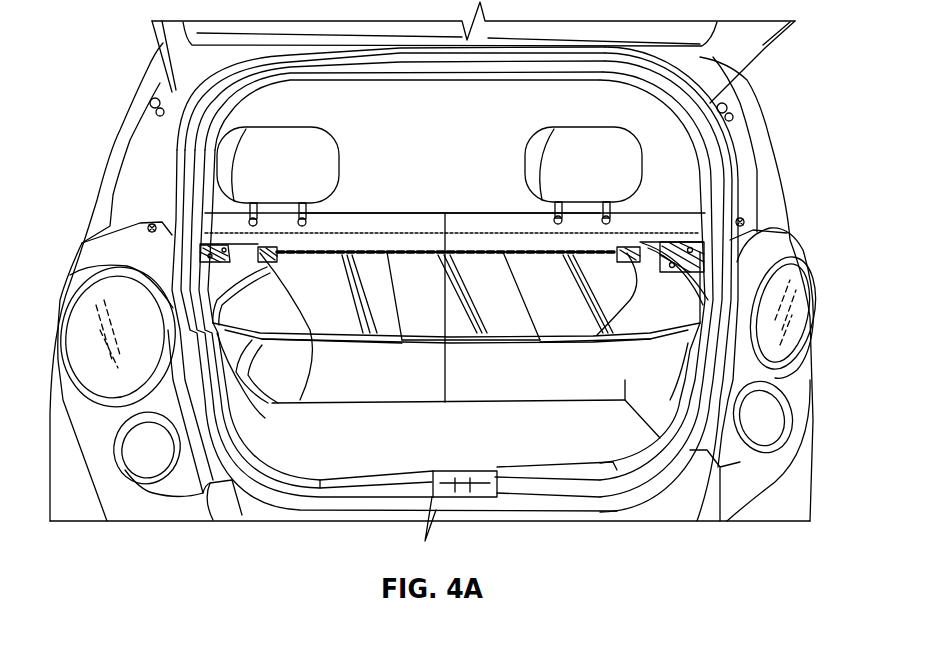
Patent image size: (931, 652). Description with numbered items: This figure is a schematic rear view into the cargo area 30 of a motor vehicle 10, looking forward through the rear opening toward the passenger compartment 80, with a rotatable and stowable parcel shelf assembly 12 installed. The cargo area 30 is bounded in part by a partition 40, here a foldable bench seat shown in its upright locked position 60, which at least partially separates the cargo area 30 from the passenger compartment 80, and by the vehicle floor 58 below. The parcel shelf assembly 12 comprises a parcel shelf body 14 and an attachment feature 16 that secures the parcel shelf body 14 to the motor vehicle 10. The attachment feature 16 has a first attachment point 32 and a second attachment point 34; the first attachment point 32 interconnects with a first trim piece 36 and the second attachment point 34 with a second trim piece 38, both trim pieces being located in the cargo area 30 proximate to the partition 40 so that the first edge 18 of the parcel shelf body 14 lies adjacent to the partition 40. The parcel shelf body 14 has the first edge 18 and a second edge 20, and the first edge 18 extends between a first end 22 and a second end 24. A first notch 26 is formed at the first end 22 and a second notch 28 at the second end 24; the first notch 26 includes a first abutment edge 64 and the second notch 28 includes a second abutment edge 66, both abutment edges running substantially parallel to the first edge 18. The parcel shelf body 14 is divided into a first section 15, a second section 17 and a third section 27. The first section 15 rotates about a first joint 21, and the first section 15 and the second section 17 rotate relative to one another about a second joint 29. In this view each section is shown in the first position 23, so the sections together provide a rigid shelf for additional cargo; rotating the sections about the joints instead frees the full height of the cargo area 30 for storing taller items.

The motor vehicle 10 is at (112, 78).
The parcel shelf assembly 12 is at (380, 243).
The parcel shelf body 14 is at (492, 345).
The first section 15 is at (358, 291).
The attachment feature 16 is at (637, 242).
The second section 17 is at (442, 296).
The first edge 18 is at (470, 243).
The second edge 20 is at (427, 342).
The first joint 21 is at (400, 278).
The first end 22 is at (305, 219).
The first position 23 is at (281, 348).
The second end 24 is at (600, 225).
The first notch 26 is at (278, 258).
The third section 27 is at (525, 288).
The second notch 28 is at (600, 290).
The second joint 29 is at (508, 282).
The cargo area 30 is at (403, 393).
The first attachment point 32 is at (262, 240).
The second attachment point 34 is at (620, 240).
The first trim piece 36 is at (200, 246).
The second trim piece 38 is at (669, 240).
The partition 40 is at (333, 243).
The vehicle floor 58 is at (447, 441).
The upright locked position 60 is at (485, 205).
The first abutment edge 64 is at (292, 345).
The second abutment edge 66 is at (587, 340).
The passenger compartment 80 is at (447, 131).